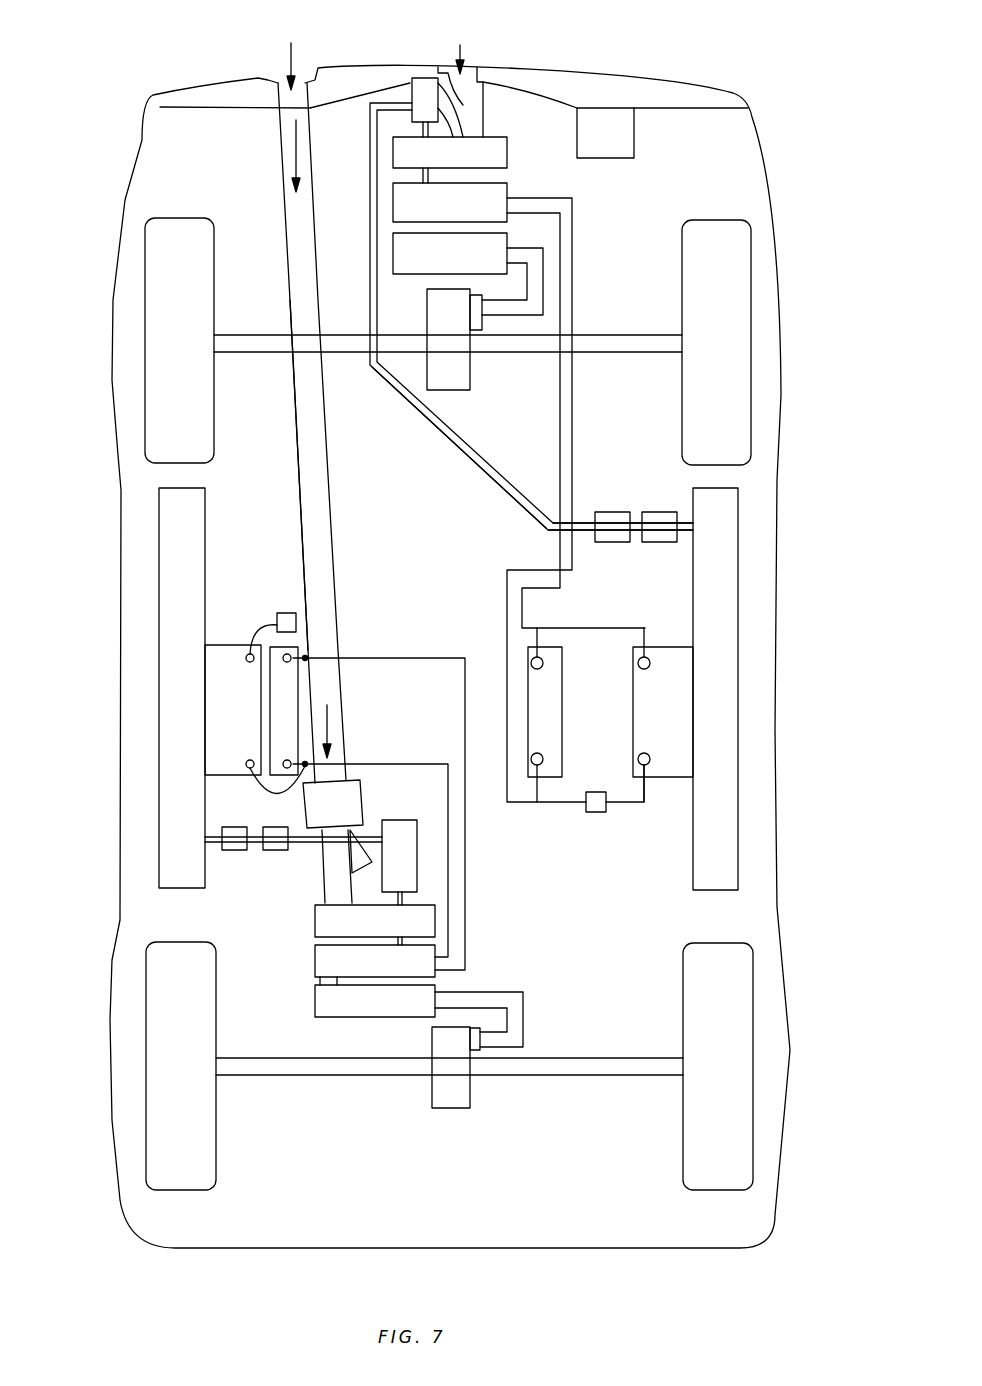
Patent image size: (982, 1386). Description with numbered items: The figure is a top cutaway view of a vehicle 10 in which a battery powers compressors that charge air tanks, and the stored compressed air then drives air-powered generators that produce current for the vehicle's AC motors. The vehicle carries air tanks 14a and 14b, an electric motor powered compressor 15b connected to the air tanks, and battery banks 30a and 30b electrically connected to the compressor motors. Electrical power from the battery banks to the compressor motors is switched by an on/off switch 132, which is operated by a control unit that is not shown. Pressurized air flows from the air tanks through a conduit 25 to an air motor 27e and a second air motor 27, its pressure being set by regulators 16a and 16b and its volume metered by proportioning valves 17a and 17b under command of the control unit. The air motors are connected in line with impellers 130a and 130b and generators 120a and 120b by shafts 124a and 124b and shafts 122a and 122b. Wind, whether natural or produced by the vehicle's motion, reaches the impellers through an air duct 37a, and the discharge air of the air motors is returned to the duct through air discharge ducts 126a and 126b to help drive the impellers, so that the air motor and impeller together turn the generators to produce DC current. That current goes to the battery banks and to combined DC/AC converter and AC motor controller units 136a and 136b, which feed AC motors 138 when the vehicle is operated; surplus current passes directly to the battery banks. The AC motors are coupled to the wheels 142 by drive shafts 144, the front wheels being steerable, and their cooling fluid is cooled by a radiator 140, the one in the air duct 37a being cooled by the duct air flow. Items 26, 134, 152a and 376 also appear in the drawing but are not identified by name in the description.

The vehicle 10 is at (100, 635).
The air tank 14a is at (187, 522).
The air tank 14b is at (700, 812).
The electric motor powered compressor 15b is at (675, 647).
The regulator 16a is at (242, 825).
The regulator 16b is at (672, 510).
The proportioning valve 17a is at (275, 853).
The proportioning valve 17b is at (605, 542).
The conduit 25 is at (303, 847).
The wiring 26 is at (490, 480).
The air motor 27 is at (425, 87).
The air motor 27e is at (417, 870).
The battery bank 30a is at (300, 683).
The battery bank 30b is at (562, 697).
The air duct 37a is at (330, 452).
The generator 120a is at (435, 987).
The generator 120b is at (500, 188).
The shaft 122a is at (315, 942).
The shaft 122b is at (420, 135).
The shaft 124a is at (402, 898).
The shaft 124b is at (403, 178).
The air discharge duct 126a is at (418, 848).
The air discharge duct 126b is at (480, 82).
The impeller 130a is at (313, 925).
The impeller 130b is at (500, 150).
The on/off switch 132 is at (292, 613).
The electrical wiring 134 is at (573, 393).
The DC/AC converter and AC motor controller 136a is at (315, 1017).
The DC/AC converter and AC motor controller 136b is at (430, 275).
The AC motor 138 is at (472, 375).
The radiator 140 is at (360, 823).
The wheels 142 is at (635, 140).
The drive shaft 144 is at (592, 335).
The seat sensor 152a is at (220, 650).
The air flow 376 is at (287, 83).